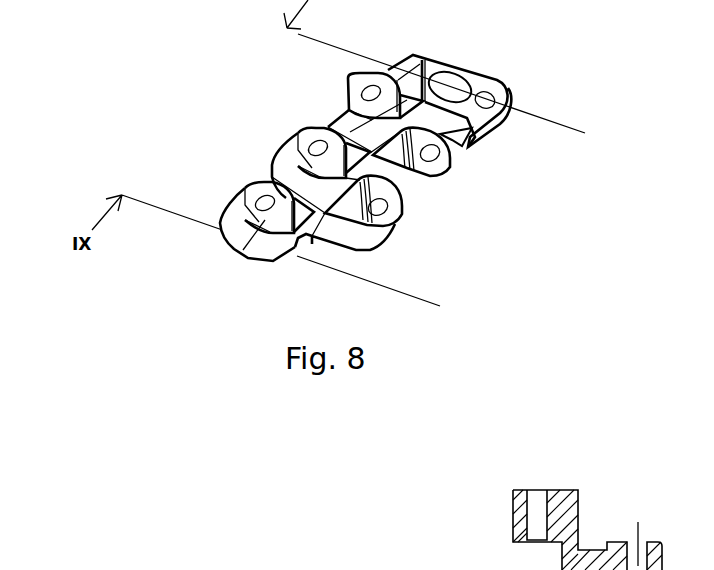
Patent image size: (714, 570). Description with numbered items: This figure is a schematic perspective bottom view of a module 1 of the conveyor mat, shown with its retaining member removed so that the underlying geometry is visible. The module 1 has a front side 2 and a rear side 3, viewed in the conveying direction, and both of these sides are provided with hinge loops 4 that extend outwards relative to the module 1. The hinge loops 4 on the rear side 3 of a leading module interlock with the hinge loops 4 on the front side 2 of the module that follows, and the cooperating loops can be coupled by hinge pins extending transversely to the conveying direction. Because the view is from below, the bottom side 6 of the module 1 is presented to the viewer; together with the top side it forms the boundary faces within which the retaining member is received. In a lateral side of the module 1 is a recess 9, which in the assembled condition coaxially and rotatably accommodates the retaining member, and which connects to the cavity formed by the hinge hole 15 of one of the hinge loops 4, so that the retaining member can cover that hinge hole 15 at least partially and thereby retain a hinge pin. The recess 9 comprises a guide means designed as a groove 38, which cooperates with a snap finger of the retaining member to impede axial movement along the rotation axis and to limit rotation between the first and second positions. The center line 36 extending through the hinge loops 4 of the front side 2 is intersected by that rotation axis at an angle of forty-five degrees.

The module 1 is at (199, 302).
The front side 2 is at (443, 177).
The rear side 3 is at (290, 152).
The hinge loops 4 is at (392, 222).
The bottom side 6 is at (329, 196).
The recess 9 is at (455, 83).
The hinge hole 15 is at (488, 100).
The groove 38 is at (480, 143).
The center line 36 is at (638, 522).